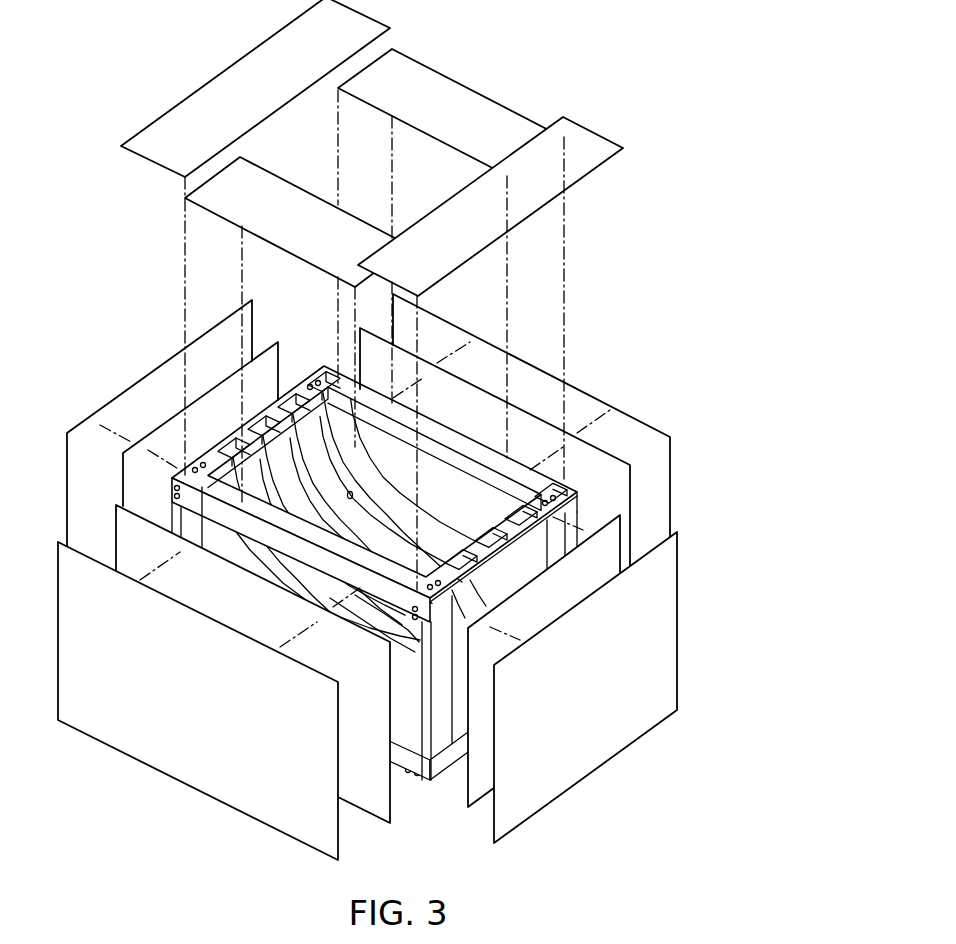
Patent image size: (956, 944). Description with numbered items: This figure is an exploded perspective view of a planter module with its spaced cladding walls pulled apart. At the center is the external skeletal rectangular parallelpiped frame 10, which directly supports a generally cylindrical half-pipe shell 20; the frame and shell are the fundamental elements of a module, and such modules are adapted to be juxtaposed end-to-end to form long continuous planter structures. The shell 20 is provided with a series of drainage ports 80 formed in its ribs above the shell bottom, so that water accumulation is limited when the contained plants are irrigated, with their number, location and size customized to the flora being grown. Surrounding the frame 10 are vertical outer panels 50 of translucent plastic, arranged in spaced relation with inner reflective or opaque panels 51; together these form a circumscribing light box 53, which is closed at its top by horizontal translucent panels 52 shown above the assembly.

The skeletal rectangular parallelpiped frame 10 is at (438, 789).
The half-pipe shell 20 is at (408, 497).
The outer panel 50 is at (128, 390).
The inner panel 51 is at (222, 383).
The horizontal translucent panel 52 is at (262, 62).
The light box 53 is at (120, 272).
The drainage port 80 is at (352, 492).